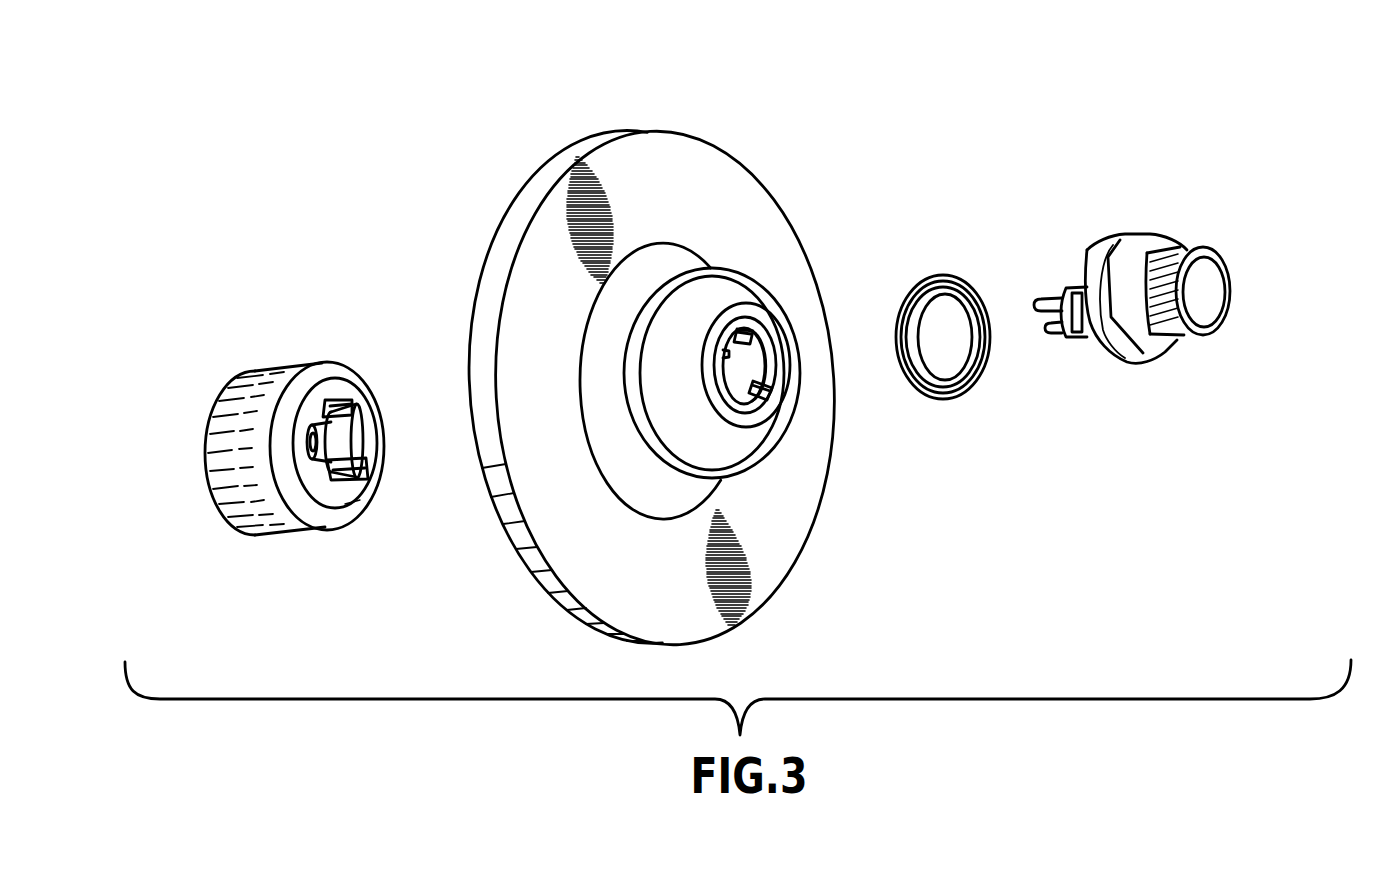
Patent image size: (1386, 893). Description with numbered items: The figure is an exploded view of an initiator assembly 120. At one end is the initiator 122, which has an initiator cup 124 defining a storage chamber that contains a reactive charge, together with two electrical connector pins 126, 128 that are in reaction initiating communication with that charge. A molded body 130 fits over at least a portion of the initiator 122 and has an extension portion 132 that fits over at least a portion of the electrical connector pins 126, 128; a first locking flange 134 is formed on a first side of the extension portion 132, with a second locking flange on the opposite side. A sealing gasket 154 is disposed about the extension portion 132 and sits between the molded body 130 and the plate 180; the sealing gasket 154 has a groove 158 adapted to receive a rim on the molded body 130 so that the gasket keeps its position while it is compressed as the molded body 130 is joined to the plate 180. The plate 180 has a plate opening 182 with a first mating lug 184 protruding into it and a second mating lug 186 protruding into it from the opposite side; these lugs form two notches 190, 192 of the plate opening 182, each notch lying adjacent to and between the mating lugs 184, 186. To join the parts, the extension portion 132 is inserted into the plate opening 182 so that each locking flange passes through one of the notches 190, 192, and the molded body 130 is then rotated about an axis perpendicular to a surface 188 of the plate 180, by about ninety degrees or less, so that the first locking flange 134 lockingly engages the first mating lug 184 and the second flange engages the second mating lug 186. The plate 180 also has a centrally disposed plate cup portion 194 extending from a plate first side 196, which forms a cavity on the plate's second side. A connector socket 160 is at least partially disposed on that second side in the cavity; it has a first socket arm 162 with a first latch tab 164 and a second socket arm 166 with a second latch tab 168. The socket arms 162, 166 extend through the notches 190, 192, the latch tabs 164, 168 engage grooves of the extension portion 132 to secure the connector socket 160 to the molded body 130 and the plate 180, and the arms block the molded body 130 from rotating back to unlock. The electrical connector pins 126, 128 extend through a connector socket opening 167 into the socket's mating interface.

The initiator assembly 120 is at (438, 138).
The initiator 122 is at (1186, 230).
The initiator cup 124 is at (1228, 270).
The electrical connector pin 126 is at (1040, 298).
The electrical connector pin 128 is at (1057, 336).
The molded body 130 is at (1143, 235).
The extension portion 132 is at (1087, 340).
The first locking flange 134 is at (1068, 280).
The sealing gasket 154 is at (937, 275).
The groove 158 is at (950, 283).
The connector socket 160 is at (272, 363).
The first socket arm 162 is at (335, 400).
The first latch tab 164 is at (360, 410).
The second socket arm 166 is at (357, 480).
The connector socket opening 167 is at (309, 436).
The second latch tab 168 is at (364, 463).
The plate 180 is at (698, 142).
The plate opening 182 is at (780, 433).
The first mating lug 184 is at (717, 393).
The second mating lug 186 is at (760, 347).
The surface 188 is at (703, 192).
The notch 190 is at (775, 294).
The notch 192 is at (773, 393).
The plate cup portion 194 is at (733, 477).
The plate first side 196 is at (768, 570).